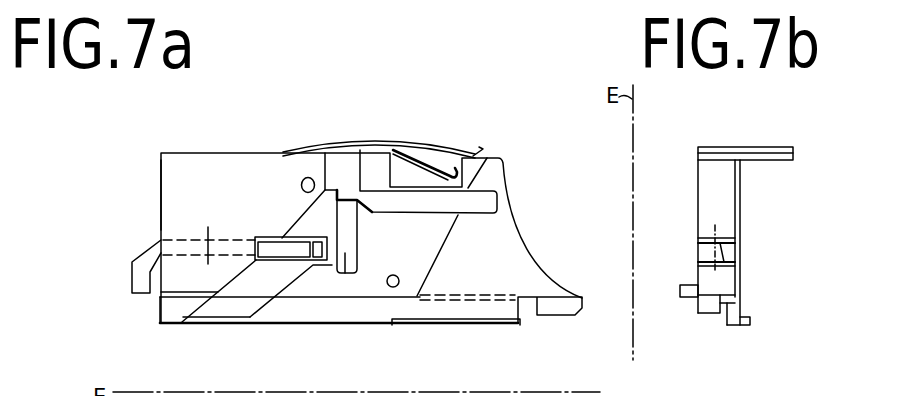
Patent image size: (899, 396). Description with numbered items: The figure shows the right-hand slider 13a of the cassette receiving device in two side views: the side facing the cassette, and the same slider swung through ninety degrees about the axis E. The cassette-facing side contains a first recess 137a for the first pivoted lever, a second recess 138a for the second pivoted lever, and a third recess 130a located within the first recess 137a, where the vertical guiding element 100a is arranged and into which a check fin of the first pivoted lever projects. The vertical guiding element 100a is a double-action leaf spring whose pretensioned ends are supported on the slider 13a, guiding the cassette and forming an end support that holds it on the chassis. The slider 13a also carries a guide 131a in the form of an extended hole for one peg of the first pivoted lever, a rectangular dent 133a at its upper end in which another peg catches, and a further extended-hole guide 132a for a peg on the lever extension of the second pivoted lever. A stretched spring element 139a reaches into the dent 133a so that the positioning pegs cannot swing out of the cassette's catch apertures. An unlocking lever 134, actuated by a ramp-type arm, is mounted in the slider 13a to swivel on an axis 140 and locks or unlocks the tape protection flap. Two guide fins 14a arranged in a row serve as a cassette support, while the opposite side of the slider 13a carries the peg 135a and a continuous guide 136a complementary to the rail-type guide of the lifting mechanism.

In FIG. 7A, the right-hand slider 13a is at (196, 151).
In FIG. 7B, the right-hand slider 13a is at (695, 181).
In FIG. 7A, the right-hand vertical guiding element 100a is at (377, 162).
In FIG. 7B, the right-hand vertical guiding element 100a is at (752, 150).
In FIG. 7A, the guide 132a is at (303, 181).
In FIG. 7A, the rectangular dent 133a is at (405, 173).
In FIG. 7A, the stretched spring element 139a is at (447, 148).
In FIG. 7A, the second recess 138a is at (175, 182).
In FIG. 7A, the axis 140 is at (204, 233).
In FIG. 7B, the axis 140 is at (720, 230).
In FIG. 7A, the unlocking lever 134 is at (133, 283).
In FIG. 7B, the unlocking lever 134 is at (703, 250).
In FIG. 7A, the guide fins 14a is at (203, 323).
In FIG. 7B, the guide fins 14a is at (750, 305).
In FIG. 7A, the third recess 130a is at (343, 286).
In FIG. 7A, the first recess 137a is at (372, 275).
In FIG. 7A, the guide 131a is at (392, 288).
In FIG. 7B, the peg 135a is at (682, 293).
In FIG. 7B, the continuous guide 136a is at (725, 307).